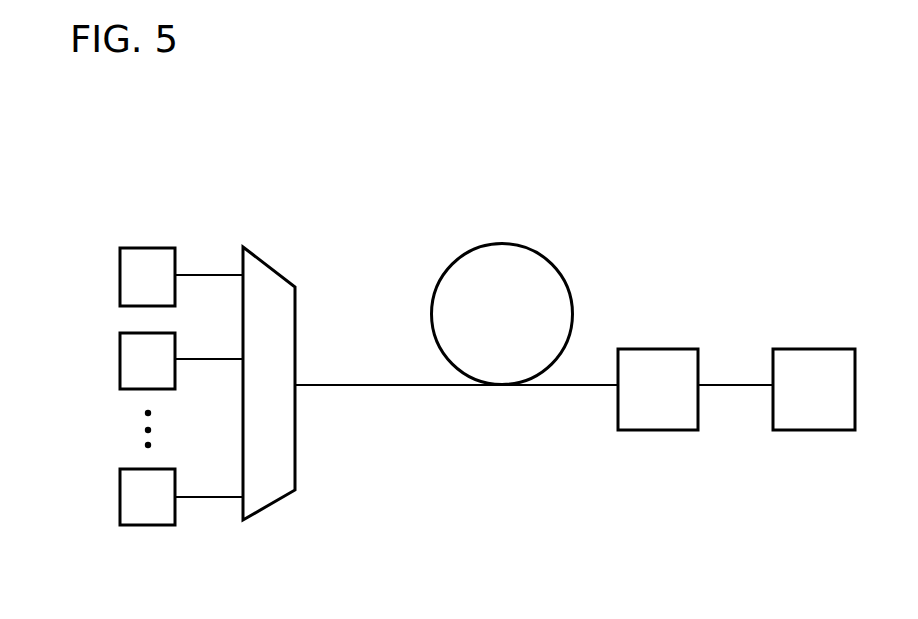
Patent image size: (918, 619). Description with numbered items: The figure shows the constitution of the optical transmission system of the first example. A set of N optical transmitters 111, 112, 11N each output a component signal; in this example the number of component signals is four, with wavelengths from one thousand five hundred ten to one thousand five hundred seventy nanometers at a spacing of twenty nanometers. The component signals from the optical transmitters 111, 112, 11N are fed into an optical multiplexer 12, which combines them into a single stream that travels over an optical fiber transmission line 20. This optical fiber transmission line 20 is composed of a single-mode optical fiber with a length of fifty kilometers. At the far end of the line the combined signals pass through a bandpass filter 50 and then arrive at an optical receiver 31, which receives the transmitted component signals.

The optical transmitter 111 is at (120, 287).
The optical transmitter 112 is at (120, 370).
The optical transmitter 11N is at (120, 506).
The optical multiplexer 12 is at (270, 264).
The optical fiber transmission line 20 is at (497, 243).
The bandpass filter 50 is at (660, 349).
The optical receiver 31 is at (820, 349).